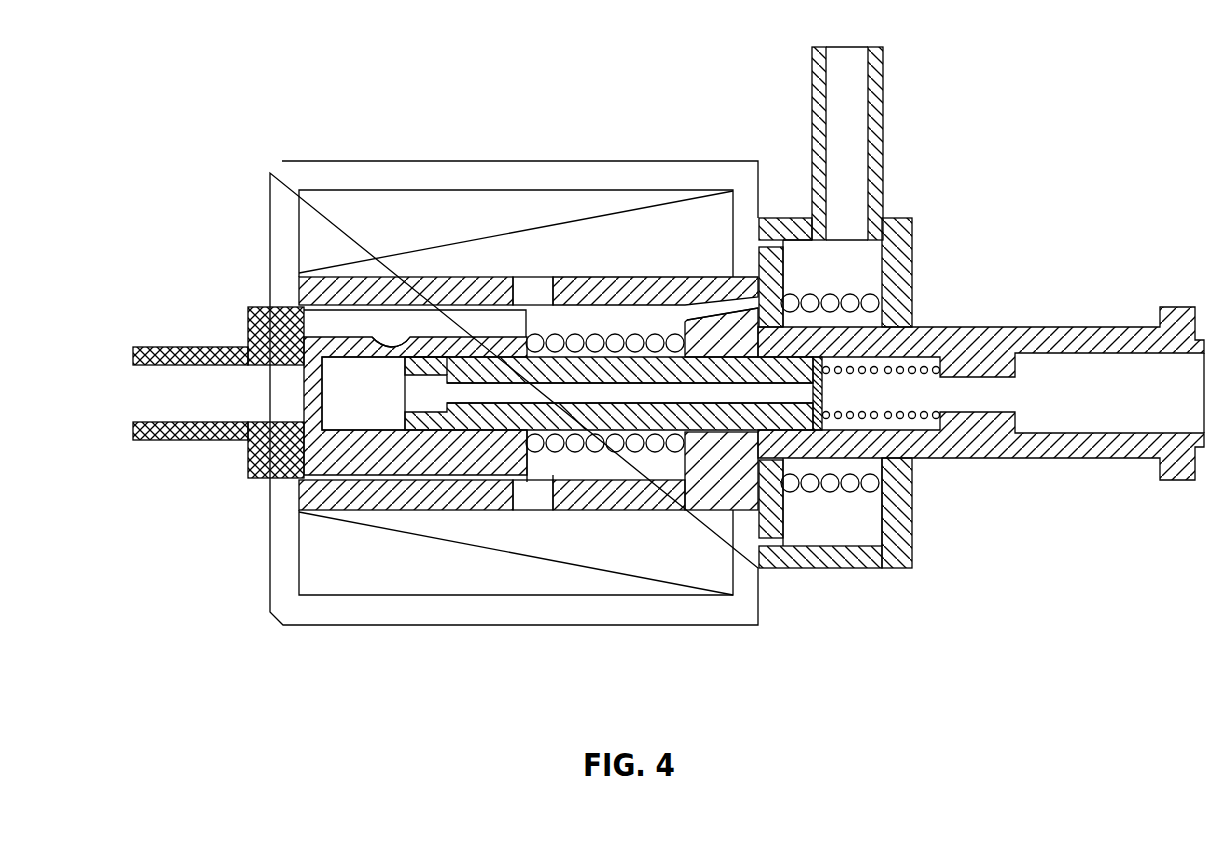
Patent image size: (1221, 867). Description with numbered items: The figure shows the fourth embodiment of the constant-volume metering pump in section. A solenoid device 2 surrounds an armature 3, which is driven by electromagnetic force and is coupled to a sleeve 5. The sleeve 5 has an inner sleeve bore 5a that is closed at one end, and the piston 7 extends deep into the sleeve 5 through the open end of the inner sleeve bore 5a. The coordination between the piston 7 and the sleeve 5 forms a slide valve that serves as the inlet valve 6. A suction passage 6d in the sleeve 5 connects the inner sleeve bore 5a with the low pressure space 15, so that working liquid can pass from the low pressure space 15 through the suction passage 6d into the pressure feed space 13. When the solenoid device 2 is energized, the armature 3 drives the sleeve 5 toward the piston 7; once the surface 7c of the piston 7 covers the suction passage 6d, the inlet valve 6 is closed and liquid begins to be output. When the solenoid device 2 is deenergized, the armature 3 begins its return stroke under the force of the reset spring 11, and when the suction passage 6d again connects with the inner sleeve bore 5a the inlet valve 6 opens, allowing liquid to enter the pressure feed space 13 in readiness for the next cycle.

The solenoid device 2 is at (322, 161).
The armature 3 is at (340, 327).
The sleeve 5 is at (348, 437).
The inner sleeve bore 5a is at (352, 386).
The inlet valve 6 is at (395, 347).
The suction passage 6d is at (382, 332).
The piston 7 is at (697, 417).
The surface of the piston 7c is at (411, 350).
The reset spring 11 is at (615, 455).
The pressure feed space 13 is at (620, 385).
The low pressure space 15 is at (548, 473).